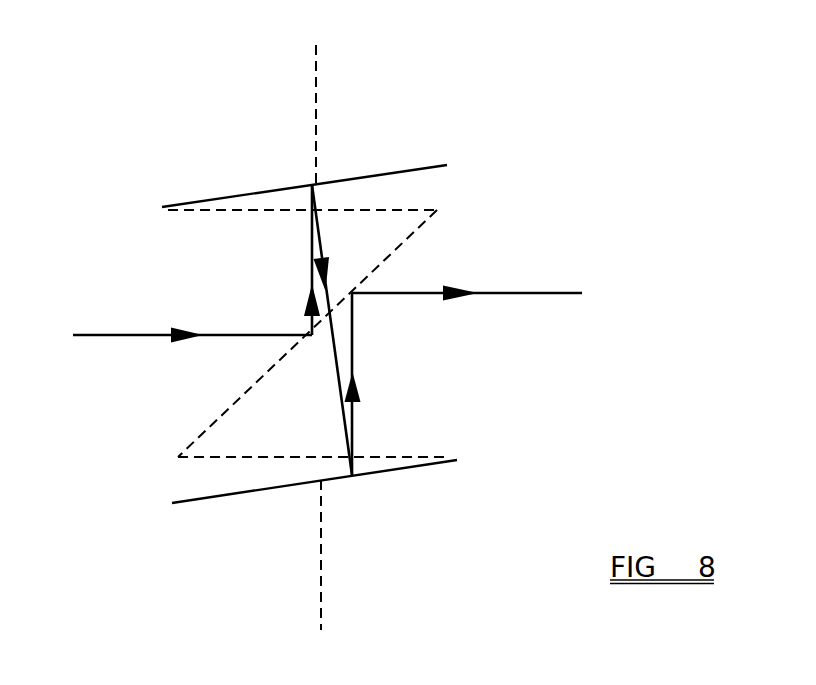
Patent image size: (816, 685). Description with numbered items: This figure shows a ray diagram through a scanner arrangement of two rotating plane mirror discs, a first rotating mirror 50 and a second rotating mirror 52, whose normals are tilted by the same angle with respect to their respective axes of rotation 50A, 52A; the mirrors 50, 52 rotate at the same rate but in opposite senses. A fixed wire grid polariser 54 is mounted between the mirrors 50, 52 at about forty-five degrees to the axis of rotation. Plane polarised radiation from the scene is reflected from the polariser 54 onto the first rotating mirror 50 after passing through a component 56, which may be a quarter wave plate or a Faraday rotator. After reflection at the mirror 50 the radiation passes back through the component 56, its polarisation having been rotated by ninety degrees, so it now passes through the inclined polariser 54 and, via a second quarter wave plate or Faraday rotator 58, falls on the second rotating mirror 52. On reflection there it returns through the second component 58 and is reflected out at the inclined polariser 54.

The first rotating mirror 50 is at (387, 173).
The axis of rotation of first mirror 50A is at (313, 105).
The second rotating mirror 52 is at (237, 493).
The axis of rotation of second mirror 52A is at (322, 558).
The wire grid polariser 54 is at (402, 243).
The quarter wave plate or Faraday rotator 56 is at (283, 213).
The second quarter wave plate or Faraday rotator 58 is at (407, 450).